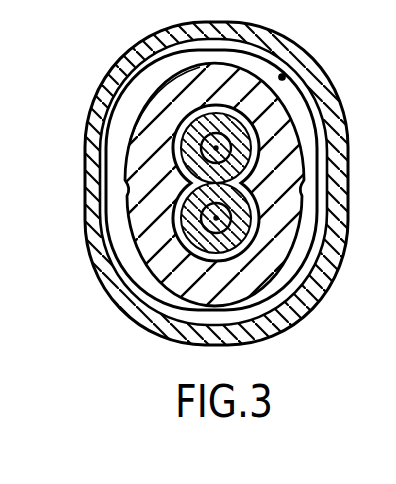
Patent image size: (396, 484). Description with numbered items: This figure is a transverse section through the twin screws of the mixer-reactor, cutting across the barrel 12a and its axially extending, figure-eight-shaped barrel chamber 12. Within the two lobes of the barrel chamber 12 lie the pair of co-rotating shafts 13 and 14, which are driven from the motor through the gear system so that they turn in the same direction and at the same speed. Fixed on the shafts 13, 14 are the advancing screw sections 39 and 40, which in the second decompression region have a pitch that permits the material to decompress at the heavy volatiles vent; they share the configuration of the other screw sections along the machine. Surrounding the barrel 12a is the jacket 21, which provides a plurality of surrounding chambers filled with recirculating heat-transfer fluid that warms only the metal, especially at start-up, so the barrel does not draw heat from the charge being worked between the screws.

The barrel chamber 12 is at (99, 103).
The barrel 12a is at (283, 75).
The shaft 13 is at (173, 165).
The shaft 14 is at (178, 233).
The jacket 21 is at (350, 180).
The advancing screw section 39 is at (254, 184).
The advancing screw section 40 is at (279, 195).